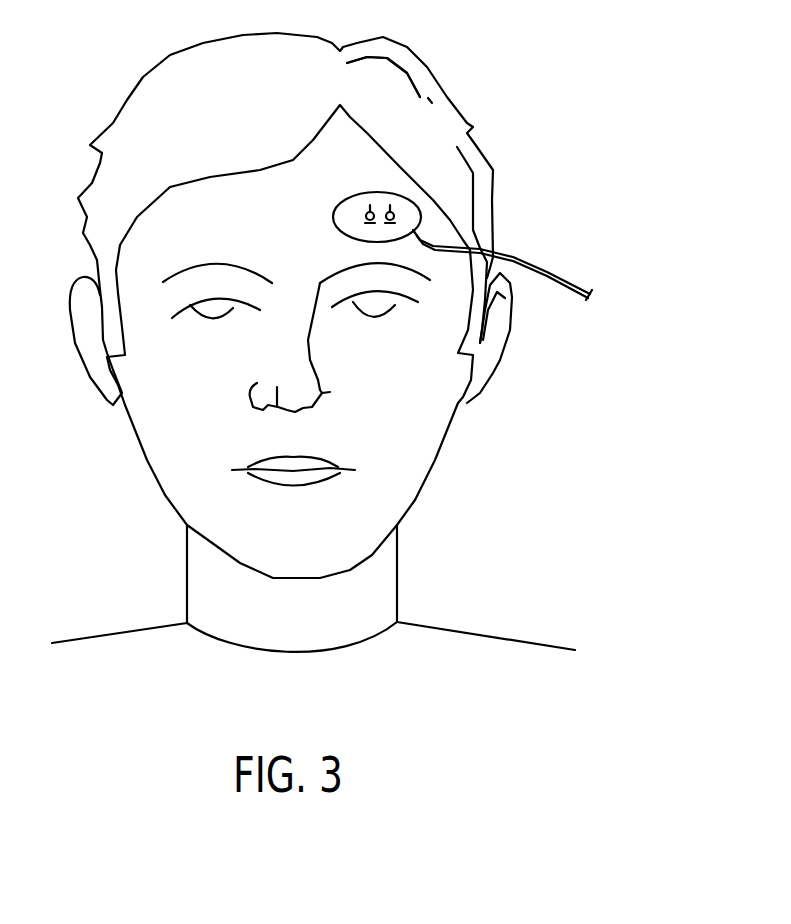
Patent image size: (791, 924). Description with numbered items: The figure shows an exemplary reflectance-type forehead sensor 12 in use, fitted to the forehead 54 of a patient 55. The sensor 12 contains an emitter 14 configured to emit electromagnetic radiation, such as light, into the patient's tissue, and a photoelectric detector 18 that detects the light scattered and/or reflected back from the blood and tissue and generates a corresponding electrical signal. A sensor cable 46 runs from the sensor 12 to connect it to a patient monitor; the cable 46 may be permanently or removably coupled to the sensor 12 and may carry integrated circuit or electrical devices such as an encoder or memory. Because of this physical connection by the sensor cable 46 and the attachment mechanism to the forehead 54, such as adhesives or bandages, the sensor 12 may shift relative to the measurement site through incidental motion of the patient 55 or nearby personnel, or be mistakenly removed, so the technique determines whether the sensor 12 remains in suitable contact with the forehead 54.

The sensor 12 is at (345, 233).
The emitter 14 is at (364, 189).
The photoelectric detector 18 is at (398, 195).
The sensor cable 46 is at (553, 280).
The forehead 54 is at (343, 125).
The patient 55 is at (497, 98).